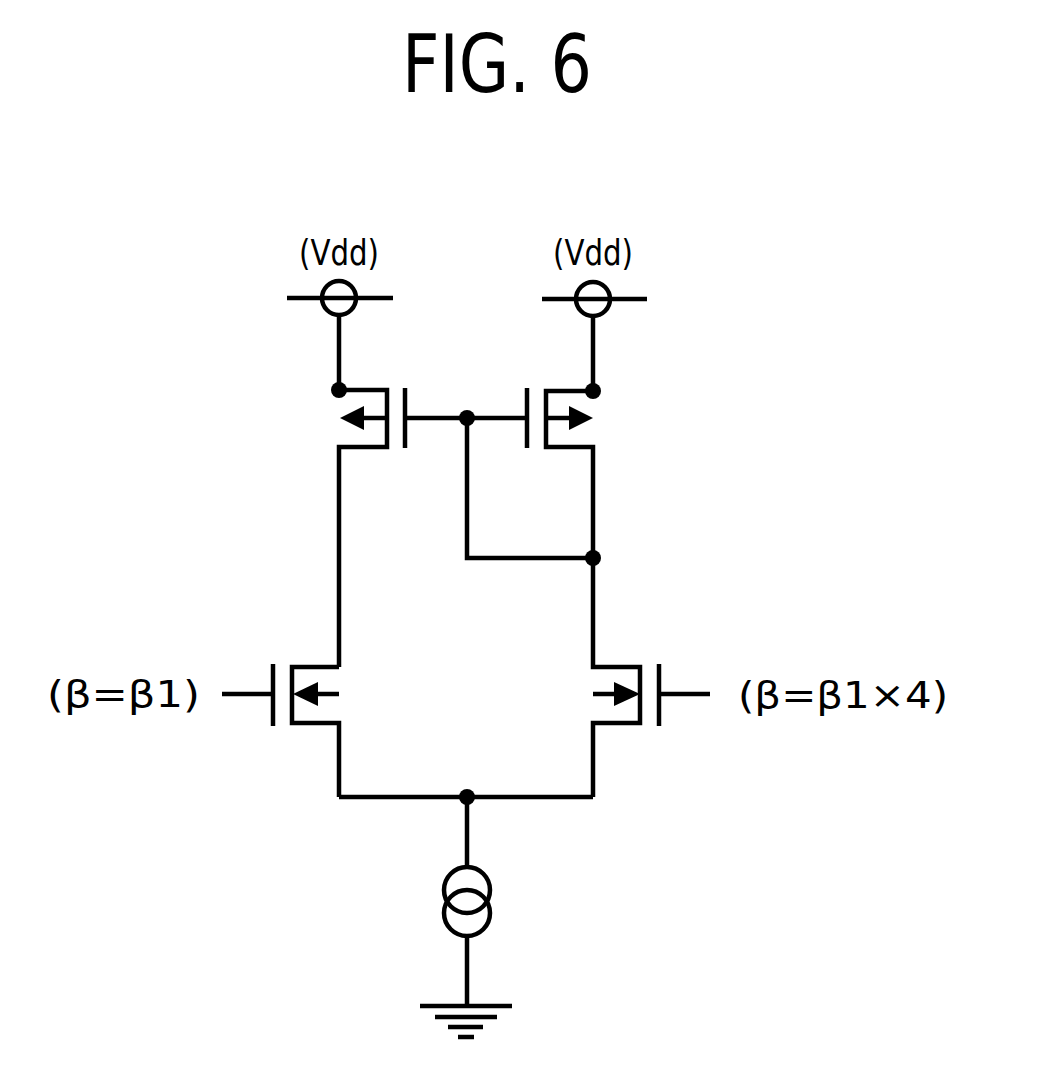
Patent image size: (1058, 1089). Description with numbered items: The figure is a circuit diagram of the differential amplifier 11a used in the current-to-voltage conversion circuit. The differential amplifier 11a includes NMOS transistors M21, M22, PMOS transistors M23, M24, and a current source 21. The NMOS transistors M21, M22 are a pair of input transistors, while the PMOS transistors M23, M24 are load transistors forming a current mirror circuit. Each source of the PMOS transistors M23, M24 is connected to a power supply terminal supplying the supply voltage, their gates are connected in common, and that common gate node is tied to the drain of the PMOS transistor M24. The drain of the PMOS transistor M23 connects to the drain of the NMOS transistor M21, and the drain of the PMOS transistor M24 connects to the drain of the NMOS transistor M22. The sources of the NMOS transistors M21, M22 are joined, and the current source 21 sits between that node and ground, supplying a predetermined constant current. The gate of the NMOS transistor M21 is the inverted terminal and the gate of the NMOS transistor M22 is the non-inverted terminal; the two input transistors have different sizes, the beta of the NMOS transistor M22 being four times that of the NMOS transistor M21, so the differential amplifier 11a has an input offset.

The differential amplifier 11a is at (820, 370).
The current source 21 is at (490, 880).
The NMOS transistor M21 is at (280, 708).
The NMOS transistor M22 is at (651, 677).
The PMOS transistor M23 is at (366, 524).
The PMOS transistor M24 is at (569, 470).